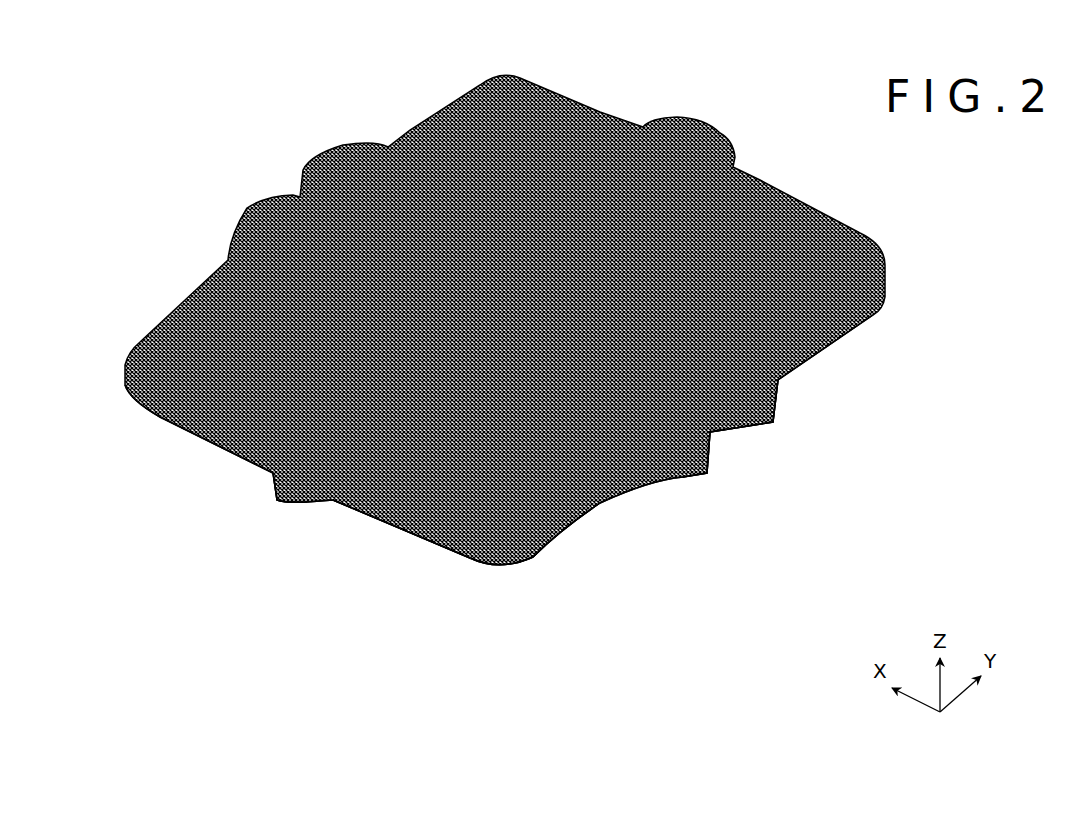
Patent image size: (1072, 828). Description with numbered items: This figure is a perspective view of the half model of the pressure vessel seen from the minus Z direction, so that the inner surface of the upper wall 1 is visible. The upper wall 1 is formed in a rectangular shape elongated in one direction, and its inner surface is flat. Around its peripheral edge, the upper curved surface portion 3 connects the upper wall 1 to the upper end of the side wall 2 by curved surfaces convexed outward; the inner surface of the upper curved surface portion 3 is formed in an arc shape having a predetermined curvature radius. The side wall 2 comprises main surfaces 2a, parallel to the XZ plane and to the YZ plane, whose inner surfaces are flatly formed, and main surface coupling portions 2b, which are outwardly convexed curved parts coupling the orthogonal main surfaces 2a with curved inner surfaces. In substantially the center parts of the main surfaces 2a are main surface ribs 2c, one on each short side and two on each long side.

The upper wall 1 is at (720, 265).
The side wall 2 is at (630, 502).
The main surfaces 2a is at (373, 517).
The main surface coupling portions 2b is at (503, 568).
The main surface ribs 2c is at (777, 424).
The upper curved surface portion 3 is at (563, 472).